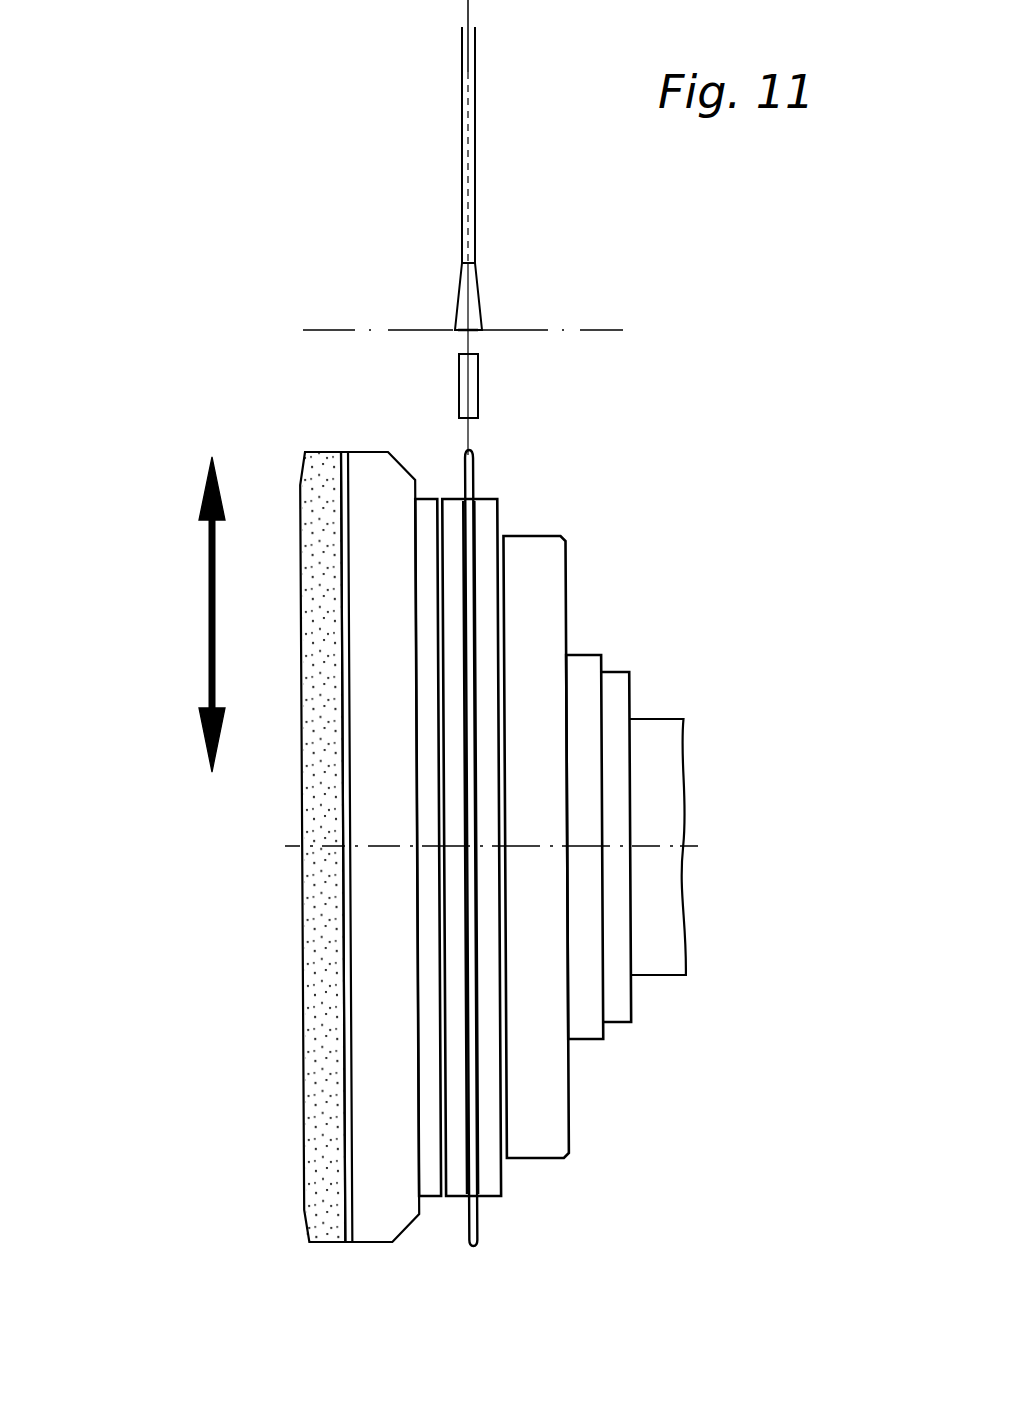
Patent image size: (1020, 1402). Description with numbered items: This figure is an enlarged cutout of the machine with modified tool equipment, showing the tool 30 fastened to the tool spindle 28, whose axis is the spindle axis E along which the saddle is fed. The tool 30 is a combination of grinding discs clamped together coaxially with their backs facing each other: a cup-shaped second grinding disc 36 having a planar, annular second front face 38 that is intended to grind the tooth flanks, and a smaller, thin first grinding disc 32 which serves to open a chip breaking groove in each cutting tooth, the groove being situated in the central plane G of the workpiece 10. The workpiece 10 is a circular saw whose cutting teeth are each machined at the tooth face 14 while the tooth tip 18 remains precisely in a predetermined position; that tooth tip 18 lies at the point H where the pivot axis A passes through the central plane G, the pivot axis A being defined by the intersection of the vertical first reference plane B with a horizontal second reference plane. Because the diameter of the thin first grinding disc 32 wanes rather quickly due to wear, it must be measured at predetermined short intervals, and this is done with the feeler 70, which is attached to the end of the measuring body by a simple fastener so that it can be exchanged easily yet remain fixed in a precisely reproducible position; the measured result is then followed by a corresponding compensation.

The workpiece 10 is at (412, 165).
The tooth face 14 is at (473, 297).
The tooth tip 18 is at (460, 333).
The feeler 70 is at (510, 379).
The tool spindle 28 is at (657, 728).
The tool 30 is at (357, 847).
The first grinding disc 32 is at (488, 1234).
The second grinding disc 36 is at (372, 1046).
The second front face 38 is at (302, 972).
The pivot axis A is at (623, 330).
The first reference plane B is at (707, 342).
The spindle axis E is at (697, 843).
The central plane G is at (468, 431).
The point H is at (470, 331).